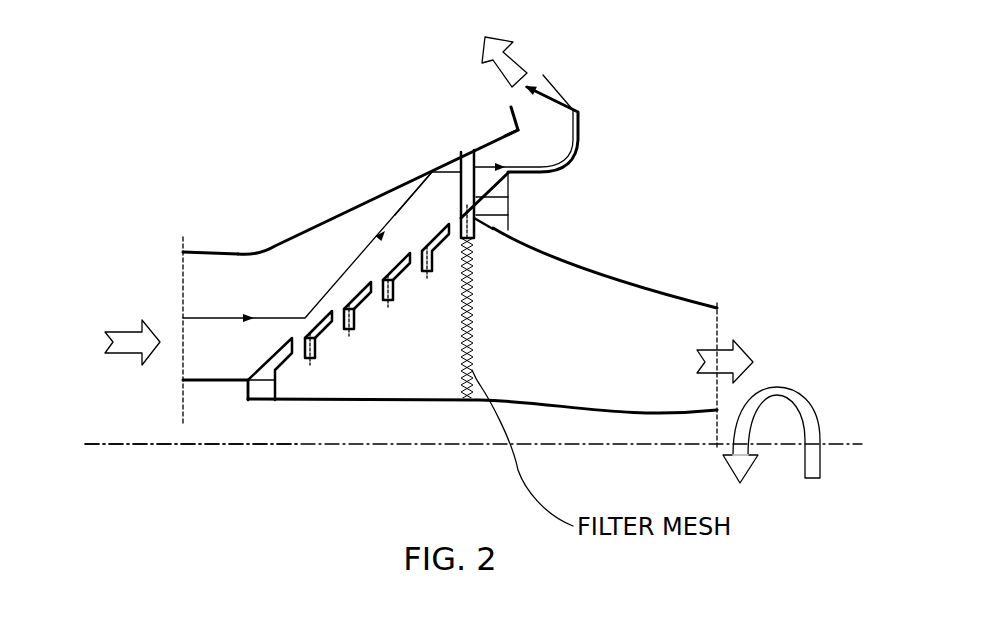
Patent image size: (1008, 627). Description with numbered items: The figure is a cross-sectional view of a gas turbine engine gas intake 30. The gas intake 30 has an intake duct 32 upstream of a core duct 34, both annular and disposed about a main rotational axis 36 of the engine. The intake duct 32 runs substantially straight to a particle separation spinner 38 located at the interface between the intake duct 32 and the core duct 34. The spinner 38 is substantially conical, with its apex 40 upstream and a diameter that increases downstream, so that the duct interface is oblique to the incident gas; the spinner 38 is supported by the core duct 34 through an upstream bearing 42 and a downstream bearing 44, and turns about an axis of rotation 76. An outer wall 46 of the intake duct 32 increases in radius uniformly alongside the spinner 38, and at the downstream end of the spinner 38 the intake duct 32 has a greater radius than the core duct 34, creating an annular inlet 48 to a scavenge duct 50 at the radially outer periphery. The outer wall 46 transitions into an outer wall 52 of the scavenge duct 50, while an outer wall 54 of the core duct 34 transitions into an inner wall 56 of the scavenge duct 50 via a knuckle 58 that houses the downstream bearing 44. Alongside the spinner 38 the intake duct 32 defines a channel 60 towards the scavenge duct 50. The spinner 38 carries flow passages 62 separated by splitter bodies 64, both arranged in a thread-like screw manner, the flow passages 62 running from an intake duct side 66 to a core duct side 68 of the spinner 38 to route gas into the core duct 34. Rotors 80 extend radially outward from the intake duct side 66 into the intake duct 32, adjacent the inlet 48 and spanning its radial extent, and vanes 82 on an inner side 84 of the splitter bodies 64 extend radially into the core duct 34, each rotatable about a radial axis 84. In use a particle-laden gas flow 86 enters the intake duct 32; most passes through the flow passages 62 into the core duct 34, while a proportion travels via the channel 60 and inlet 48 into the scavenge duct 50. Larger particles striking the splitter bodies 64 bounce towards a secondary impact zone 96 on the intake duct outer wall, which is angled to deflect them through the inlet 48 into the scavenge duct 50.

The gas intake 30 is at (246, 222).
The intake duct 32 is at (200, 283).
The core duct 34 is at (607, 297).
The main rotational axis 36 is at (258, 445).
The particle separation spinner 38 is at (360, 307).
The apex 40 is at (280, 360).
The upstream bearing 42 is at (248, 388).
The downstream bearing 44 is at (503, 205).
The outer wall of the intake duct 46 is at (340, 207).
The annular inlet 48 is at (487, 167).
The scavenge duct 50 is at (544, 81).
The outer wall of the scavenge duct 52 is at (503, 133).
The outer wall of the core duct 54 is at (588, 268).
The inner wall of the scavenge duct 56 is at (580, 148).
The knuckle 58 is at (482, 203).
The channel 60 is at (314, 243).
The flow passages 62 is at (392, 300).
The splitter bodies 64 is at (405, 275).
The intake duct side of the spinner 66 is at (440, 220).
The core duct side of the spinner 68 is at (322, 340).
The axis of rotation 76 is at (197, 445).
The rotors 80 is at (464, 160).
The vanes 82 is at (352, 330).
The inner side of splitter bodies 84 is at (311, 360).
The gas flow 86 is at (108, 342).
The secondary impact zone 96 is at (422, 160).